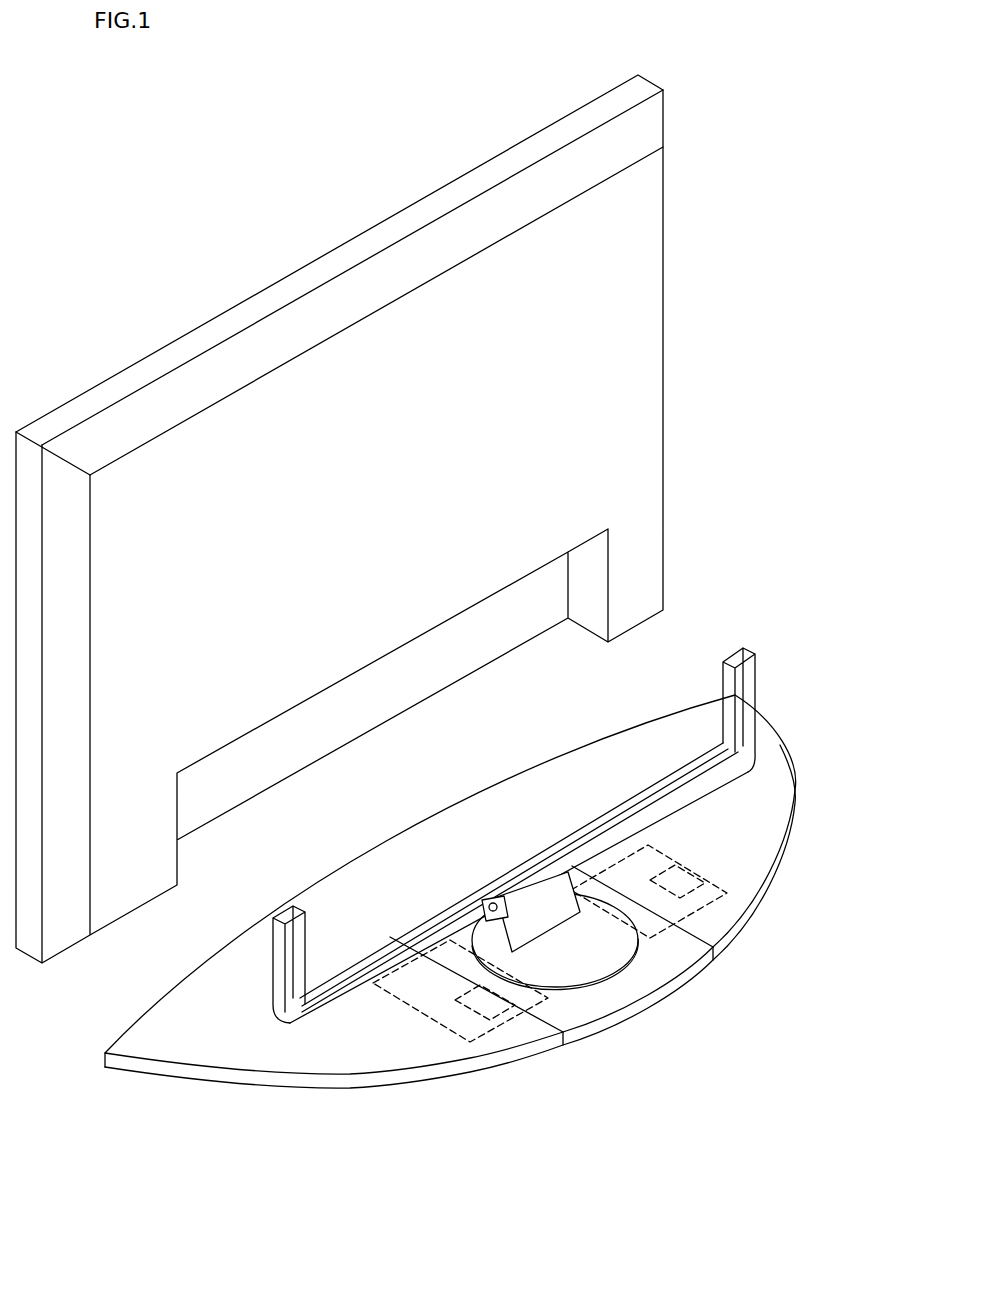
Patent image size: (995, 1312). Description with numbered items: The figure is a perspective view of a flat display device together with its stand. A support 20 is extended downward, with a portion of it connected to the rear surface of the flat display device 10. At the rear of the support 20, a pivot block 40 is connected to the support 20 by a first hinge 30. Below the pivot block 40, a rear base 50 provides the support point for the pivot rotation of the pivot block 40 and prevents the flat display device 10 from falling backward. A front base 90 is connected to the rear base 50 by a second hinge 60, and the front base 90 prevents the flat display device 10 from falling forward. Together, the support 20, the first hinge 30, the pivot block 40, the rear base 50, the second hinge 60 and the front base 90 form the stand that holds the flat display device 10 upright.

The flat display device 10 is at (665, 337).
The support 20 is at (572, 862).
The first hinge 30 is at (490, 893).
The pivot block 40 is at (537, 890).
The rear base 50 is at (640, 983).
The second hinge 60 is at (440, 1030).
The front base 90 is at (772, 796).